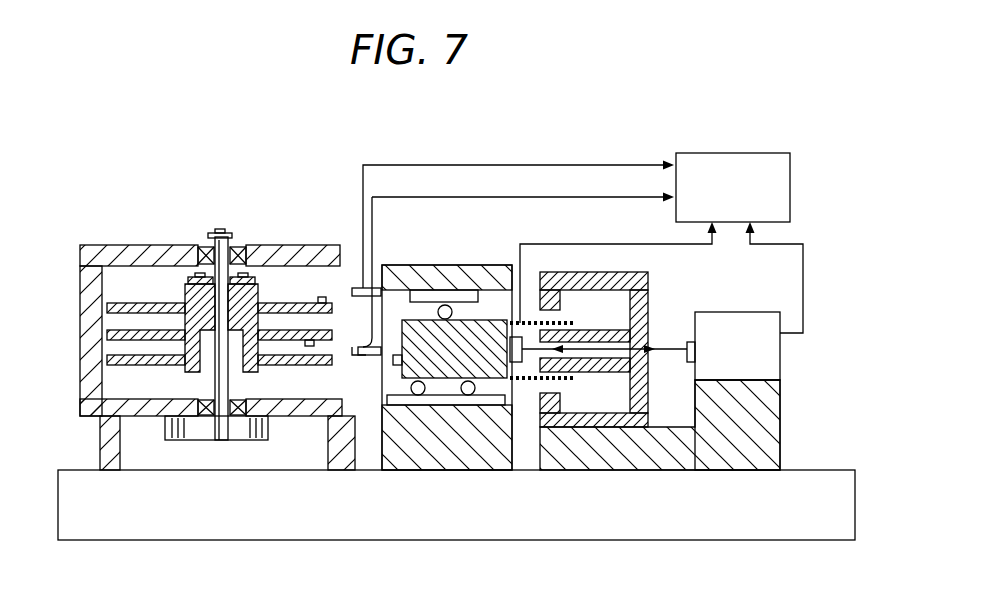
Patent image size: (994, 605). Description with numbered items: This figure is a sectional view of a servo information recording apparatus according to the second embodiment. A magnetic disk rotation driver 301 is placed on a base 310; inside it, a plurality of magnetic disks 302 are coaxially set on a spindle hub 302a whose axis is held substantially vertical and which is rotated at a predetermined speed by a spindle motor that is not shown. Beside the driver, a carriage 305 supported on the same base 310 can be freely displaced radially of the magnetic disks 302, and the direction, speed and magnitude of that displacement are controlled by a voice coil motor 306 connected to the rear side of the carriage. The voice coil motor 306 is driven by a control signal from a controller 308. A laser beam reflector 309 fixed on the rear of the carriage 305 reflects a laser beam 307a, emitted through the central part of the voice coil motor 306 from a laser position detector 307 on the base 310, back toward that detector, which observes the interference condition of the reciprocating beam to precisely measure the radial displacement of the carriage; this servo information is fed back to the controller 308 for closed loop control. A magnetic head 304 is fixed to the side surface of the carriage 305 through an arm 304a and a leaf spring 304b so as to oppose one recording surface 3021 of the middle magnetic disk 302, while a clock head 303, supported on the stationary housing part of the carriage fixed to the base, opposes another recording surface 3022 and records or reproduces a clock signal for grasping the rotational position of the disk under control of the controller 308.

The magnetic disk rotation driver 301 is at (97, 255).
The magnetic disk 302 is at (105, 307).
The recording surface 3021 is at (105, 333).
The recording surface 3022 is at (148, 300).
The spindle hub 302a is at (203, 256).
The clock head 303 is at (323, 297).
The magnetic head 304 is at (310, 347).
The arm 304a is at (365, 356).
The leaf spring 304b is at (340, 350).
The carriage 305 is at (452, 380).
The voice coil motor 306 is at (640, 428).
The laser position detector 307 is at (778, 358).
The laser beam 307a is at (664, 346).
The controller 308 is at (776, 151).
The laser beam reflector 309 is at (516, 364).
The base 310 is at (824, 469).